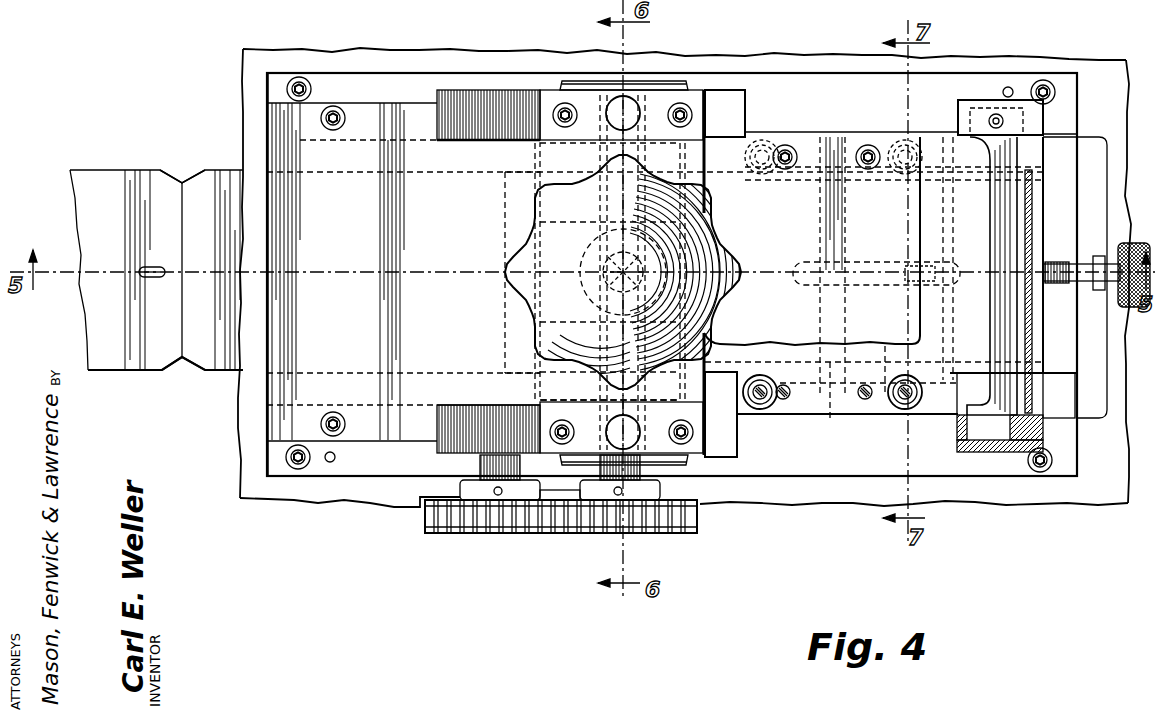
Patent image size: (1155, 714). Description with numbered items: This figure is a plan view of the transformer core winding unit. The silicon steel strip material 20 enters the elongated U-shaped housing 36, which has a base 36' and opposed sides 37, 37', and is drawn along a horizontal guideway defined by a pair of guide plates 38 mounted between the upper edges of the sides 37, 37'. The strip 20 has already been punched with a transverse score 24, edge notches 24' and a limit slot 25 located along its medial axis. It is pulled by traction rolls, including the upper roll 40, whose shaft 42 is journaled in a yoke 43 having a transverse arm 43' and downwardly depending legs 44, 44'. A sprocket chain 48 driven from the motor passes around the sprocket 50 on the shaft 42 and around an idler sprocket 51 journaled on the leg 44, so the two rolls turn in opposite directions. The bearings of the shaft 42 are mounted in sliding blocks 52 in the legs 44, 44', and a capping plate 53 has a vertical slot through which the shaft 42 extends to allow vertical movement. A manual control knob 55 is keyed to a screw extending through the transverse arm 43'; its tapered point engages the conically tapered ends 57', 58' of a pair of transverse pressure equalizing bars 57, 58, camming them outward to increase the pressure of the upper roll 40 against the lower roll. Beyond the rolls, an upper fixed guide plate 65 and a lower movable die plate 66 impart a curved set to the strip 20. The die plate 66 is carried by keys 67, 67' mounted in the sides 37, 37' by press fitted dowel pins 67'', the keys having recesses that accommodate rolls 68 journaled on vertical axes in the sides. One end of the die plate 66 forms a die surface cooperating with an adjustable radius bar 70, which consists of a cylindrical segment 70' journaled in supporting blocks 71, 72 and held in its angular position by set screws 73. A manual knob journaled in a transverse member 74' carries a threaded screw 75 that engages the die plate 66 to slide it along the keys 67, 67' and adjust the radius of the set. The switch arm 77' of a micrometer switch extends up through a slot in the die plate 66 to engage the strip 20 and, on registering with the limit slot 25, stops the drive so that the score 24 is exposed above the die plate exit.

The silicon steel strip material 20 is at (136, 360).
The transverse score 24 is at (198, 270).
The edge notches 24' is at (182, 275).
The limit slot 25 is at (155, 280).
The housing 36 is at (672, 252).
The base 36' is at (343, 487).
The side of housing 37 is at (612, 441).
The side of housing 37' is at (672, 110).
The guide plates 38 is at (275, 395).
The upper traction roll 40 is at (548, 185).
The shaft 42 is at (597, 478).
The yoke 43 is at (628, 122).
The transverse arm 43' is at (638, 395).
The depending leg 44 is at (488, 416).
The depending leg 44' is at (488, 128).
The sprocket chain 48 is at (545, 535).
The sprocket 50 is at (638, 533).
The idler sprocket 51 is at (484, 533).
The sliding block 52 is at (676, 105).
The capping plate 53 is at (600, 80).
The manual control knob 55 is at (722, 238).
The pressure equalizing bar 57 is at (610, 396).
The conically tapered end 57' is at (610, 272).
The pressure equalizing bar 58 is at (591, 272).
The conically tapered end 58' is at (598, 265).
The upper fixed guide plate 65 is at (922, 320).
The lower movable die plate 66 is at (1034, 350).
The key 67 is at (878, 358).
The key 67' is at (961, 258).
The dowel pins 67'' is at (870, 292).
The rolls 68 is at (765, 142).
The adjustable radius bar 70 is at (986, 276).
The cylindrical segment 70' is at (986, 276).
The supporting block 71 is at (960, 447).
The supporting block 72 is at (1040, 118).
The set screws 73 is at (996, 113).
The transverse member 74' is at (1080, 294).
The threaded screw 75 is at (1052, 283).
The switch arm 77' is at (879, 258).